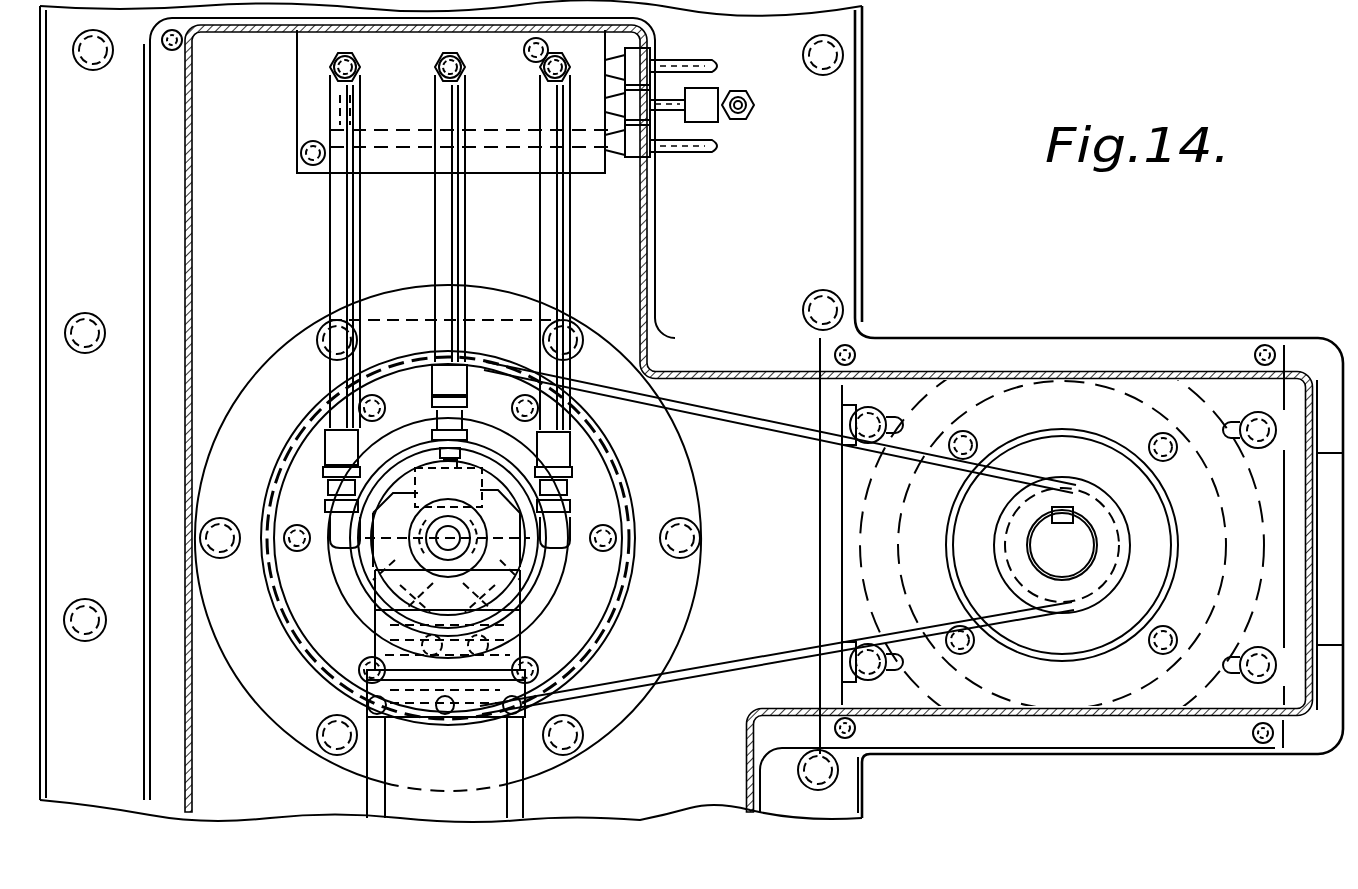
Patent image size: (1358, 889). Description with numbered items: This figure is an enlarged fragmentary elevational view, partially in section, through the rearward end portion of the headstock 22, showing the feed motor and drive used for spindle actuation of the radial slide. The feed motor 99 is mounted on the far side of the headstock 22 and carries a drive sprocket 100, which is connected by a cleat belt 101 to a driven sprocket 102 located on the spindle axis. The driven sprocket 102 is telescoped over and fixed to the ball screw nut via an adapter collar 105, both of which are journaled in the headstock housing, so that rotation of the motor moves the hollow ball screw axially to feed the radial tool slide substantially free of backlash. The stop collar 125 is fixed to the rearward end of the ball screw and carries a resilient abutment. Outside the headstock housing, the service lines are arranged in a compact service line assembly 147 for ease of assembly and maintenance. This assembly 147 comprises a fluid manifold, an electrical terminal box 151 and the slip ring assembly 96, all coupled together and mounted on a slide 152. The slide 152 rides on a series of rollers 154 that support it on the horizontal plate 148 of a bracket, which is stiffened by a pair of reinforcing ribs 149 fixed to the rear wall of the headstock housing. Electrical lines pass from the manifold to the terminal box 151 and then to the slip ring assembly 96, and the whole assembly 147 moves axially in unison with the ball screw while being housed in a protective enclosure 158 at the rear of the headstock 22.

The headstock 22 is at (883, 174).
The protective enclosure 158 is at (197, 234).
The service line assembly 147 is at (711, 713).
The stop collar 125 is at (305, 610).
The driven sprocket 102 is at (626, 488).
The electrical terminal box 151 is at (545, 577).
The adapter collar 105 is at (546, 608).
The slip ring assembly 96 is at (398, 500).
The rollers 154 is at (396, 728).
The slide 152 is at (345, 655).
The horizontal plate 148 is at (506, 726).
The reinforcing ribs 149 is at (368, 822).
The cleat belt 101 is at (793, 435).
The feed motor 99 is at (1072, 446).
The drive sprocket 100 is at (1094, 600).